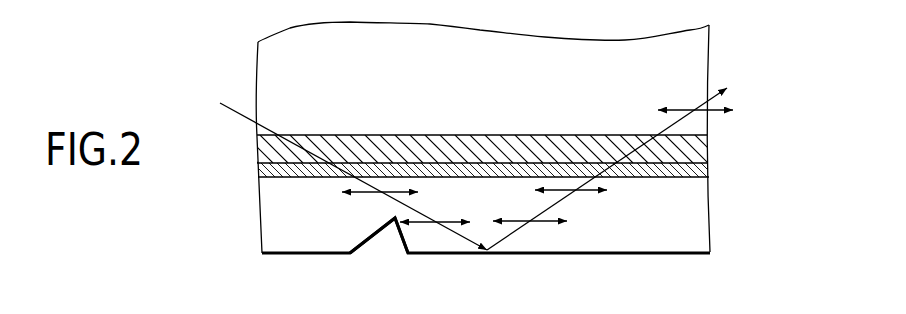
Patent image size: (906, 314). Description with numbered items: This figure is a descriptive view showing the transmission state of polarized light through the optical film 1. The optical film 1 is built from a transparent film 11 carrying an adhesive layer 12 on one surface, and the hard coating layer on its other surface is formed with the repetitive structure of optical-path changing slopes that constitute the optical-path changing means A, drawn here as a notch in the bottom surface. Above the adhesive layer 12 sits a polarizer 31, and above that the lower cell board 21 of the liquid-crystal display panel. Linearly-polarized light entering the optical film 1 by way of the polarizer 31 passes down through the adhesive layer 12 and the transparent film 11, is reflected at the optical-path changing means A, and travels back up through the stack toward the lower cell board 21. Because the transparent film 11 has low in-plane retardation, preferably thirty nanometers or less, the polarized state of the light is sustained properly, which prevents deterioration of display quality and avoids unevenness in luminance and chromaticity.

The optical film 1 is at (776, 162).
The transparent film 11 is at (687, 205).
The adhesive layer 12 is at (690, 168).
The polarizer 31 is at (690, 141).
The lower cell board 21 is at (690, 66).
The optical-path changing means A is at (386, 232).